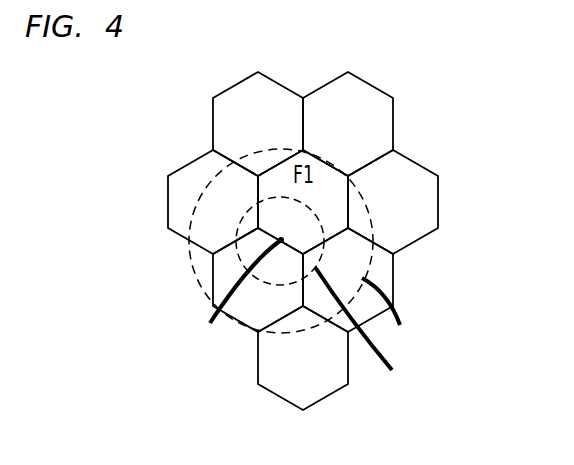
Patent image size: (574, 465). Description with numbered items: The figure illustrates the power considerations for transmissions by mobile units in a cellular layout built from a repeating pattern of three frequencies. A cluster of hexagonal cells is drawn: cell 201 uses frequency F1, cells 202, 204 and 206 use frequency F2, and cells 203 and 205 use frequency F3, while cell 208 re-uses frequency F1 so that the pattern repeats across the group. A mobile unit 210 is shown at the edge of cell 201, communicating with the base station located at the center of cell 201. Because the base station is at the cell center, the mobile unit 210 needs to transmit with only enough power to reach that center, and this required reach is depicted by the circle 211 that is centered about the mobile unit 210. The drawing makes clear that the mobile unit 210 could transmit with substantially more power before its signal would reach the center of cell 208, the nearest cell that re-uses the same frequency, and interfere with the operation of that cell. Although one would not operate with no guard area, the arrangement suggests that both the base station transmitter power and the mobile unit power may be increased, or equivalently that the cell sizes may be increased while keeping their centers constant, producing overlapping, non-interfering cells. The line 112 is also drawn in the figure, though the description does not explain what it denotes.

The path segment 112 is at (401, 312).
The cell 201 is at (229, 87).
The cell 202 is at (375, 85).
The cell 203 is at (424, 167).
The cell 204 is at (394, 266).
The cell 205 is at (213, 268).
The cell 206 is at (188, 164).
The cell 208 is at (258, 371).
The mobile unit 210 is at (226, 294).
The circle 211 is at (372, 330).